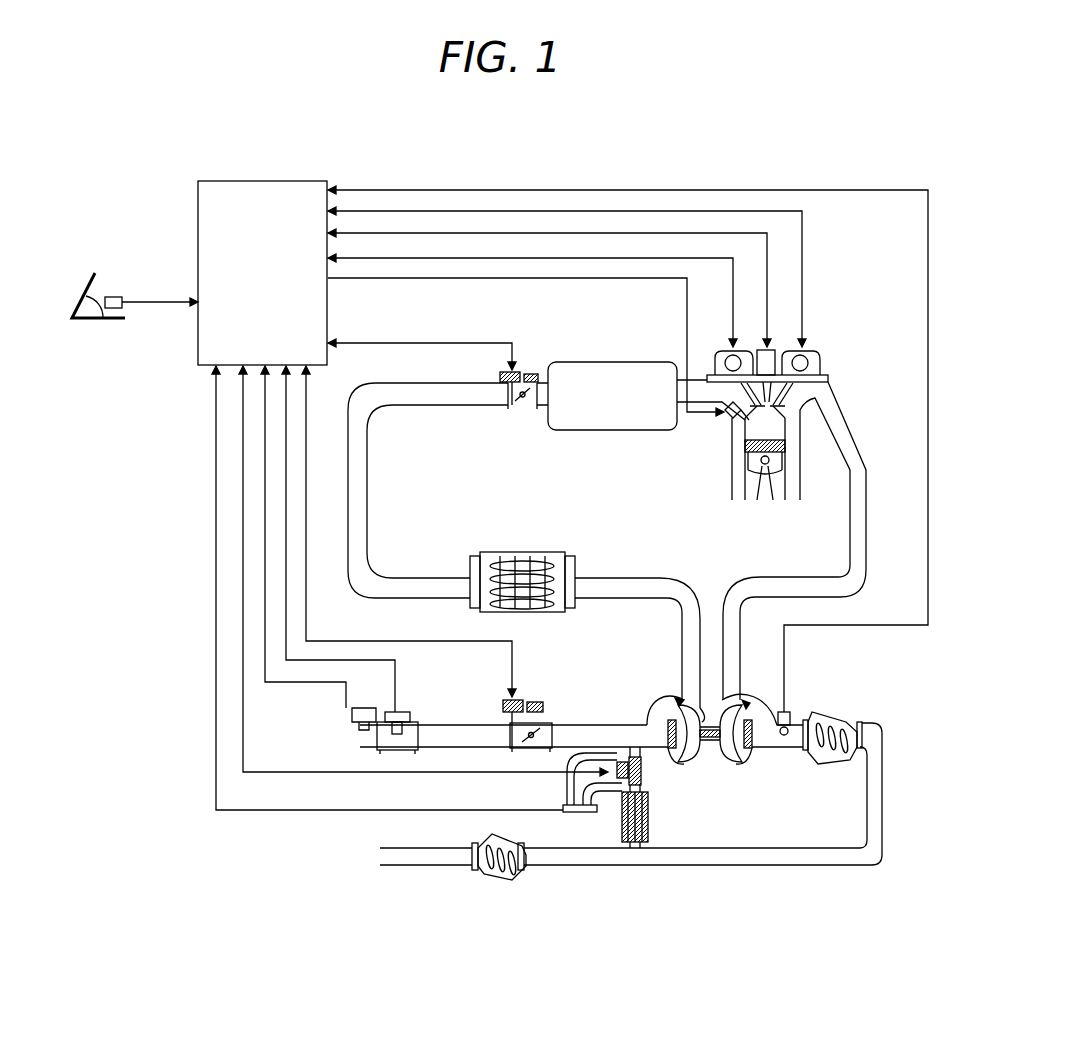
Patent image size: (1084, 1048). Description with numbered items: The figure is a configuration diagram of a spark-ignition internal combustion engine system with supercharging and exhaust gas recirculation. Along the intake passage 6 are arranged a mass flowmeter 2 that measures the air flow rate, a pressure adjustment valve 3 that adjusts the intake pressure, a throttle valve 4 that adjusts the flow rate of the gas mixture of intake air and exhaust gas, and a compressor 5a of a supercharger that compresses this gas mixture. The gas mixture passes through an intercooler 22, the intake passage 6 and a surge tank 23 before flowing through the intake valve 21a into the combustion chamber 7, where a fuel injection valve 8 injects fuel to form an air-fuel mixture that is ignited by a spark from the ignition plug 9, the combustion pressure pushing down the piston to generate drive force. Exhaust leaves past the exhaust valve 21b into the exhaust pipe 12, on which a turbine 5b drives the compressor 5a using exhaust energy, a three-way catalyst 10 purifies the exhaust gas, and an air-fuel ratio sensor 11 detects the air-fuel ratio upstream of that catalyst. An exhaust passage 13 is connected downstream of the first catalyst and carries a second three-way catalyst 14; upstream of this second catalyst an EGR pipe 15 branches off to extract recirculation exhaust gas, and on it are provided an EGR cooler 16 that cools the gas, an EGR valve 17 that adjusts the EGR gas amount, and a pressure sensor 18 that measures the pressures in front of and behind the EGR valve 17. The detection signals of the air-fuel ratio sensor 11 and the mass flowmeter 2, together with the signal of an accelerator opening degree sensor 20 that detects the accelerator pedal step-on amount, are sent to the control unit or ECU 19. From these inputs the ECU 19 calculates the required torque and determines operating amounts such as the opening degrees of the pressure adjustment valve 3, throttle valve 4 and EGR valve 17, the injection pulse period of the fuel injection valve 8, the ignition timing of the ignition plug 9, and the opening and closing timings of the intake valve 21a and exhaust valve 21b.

The mass flowmeter 2 is at (398, 712).
The pressure adjustment valve 3 is at (546, 722).
The throttle valve 4 is at (518, 410).
The compressor 5a is at (700, 765).
The turbine 5b is at (742, 766).
The intake passage 6 is at (367, 490).
The combustion chamber 7 is at (748, 452).
The fuel injection valve 8 is at (726, 418).
The ignition plug 9 is at (773, 350).
The three-way catalyst 10 is at (830, 716).
The air-fuel ratio sensor 11 is at (786, 710).
The exhaust pipe 12 is at (862, 458).
The exhaust passage 13 is at (884, 770).
The second three-way catalyst 14 is at (486, 876).
The EGR pipe 15 is at (650, 786).
The EGR cooler 16 is at (650, 826).
The EGR valve 17 is at (634, 757).
The pressure sensor 18 is at (583, 812).
The control unit (ECU) 19 is at (197, 346).
The accelerator opening degree sensor 20 is at (117, 296).
The intake valve 21a is at (716, 352).
The exhaust valve 21b is at (806, 352).
The intercooler 22 is at (578, 568).
The surge tank 23 is at (604, 431).